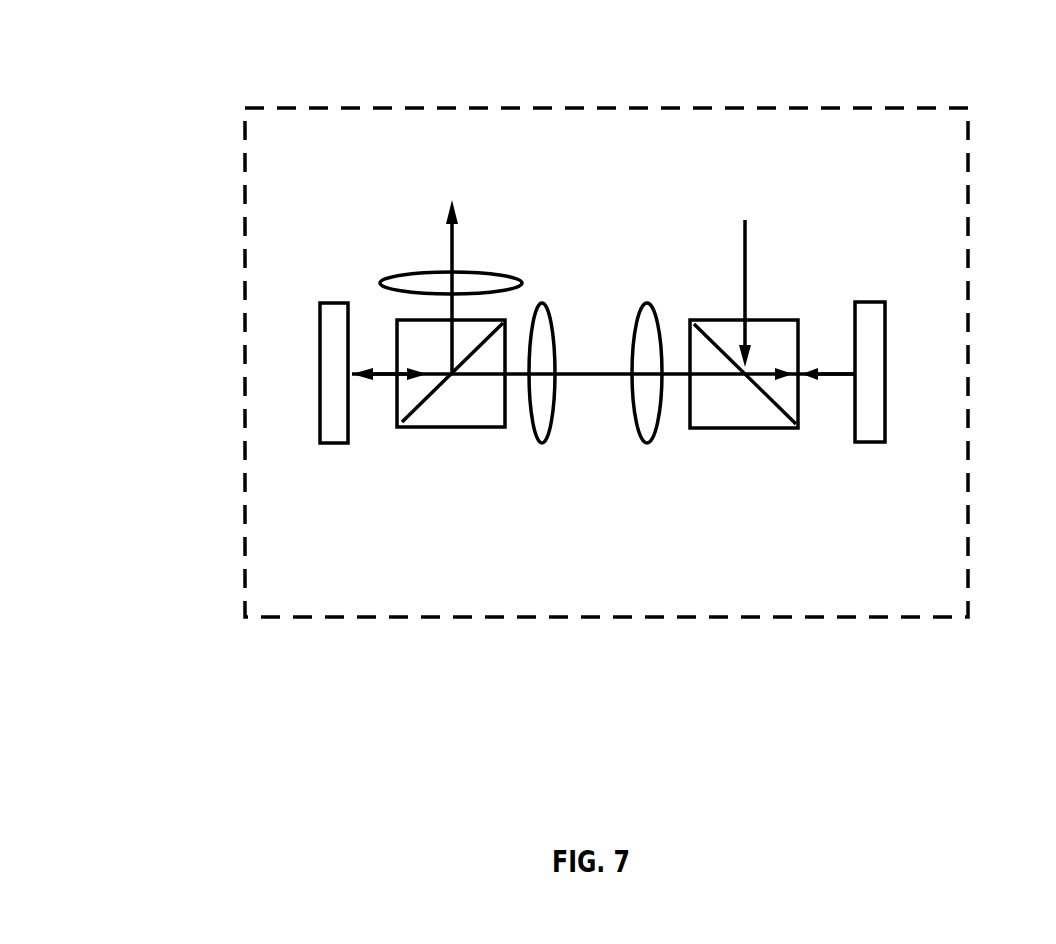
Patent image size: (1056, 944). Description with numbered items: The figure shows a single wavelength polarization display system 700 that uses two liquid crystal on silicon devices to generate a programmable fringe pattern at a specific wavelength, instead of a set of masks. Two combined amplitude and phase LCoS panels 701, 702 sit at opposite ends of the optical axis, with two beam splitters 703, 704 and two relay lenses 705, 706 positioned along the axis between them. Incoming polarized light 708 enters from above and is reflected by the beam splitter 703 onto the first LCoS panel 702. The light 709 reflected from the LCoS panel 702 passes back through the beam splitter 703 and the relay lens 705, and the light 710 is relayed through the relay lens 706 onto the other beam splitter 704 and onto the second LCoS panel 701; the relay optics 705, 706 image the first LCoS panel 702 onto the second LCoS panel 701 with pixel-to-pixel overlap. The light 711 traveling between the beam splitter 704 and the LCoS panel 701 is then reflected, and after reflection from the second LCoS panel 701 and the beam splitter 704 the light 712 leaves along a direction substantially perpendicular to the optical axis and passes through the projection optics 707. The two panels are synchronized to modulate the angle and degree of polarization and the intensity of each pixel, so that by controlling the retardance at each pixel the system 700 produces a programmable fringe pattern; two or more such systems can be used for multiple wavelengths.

The single wavelength polarization display system 700 is at (830, 108).
The second LCoS panel 701 is at (322, 445).
The first LCoS panel 702 is at (877, 300).
The beam splitter 703 is at (760, 318).
The beam splitter 704 is at (437, 428).
The relay lens 705 is at (647, 440).
The relay lens 706 is at (542, 440).
The projection optics 707 is at (522, 287).
The incoming polarized light 708 is at (745, 265).
The light reflected from first LCoS 709 is at (827, 374).
The relayed light 710 is at (608, 377).
The beam segment to first reflector 711 is at (388, 370).
The output light 712 is at (457, 243).